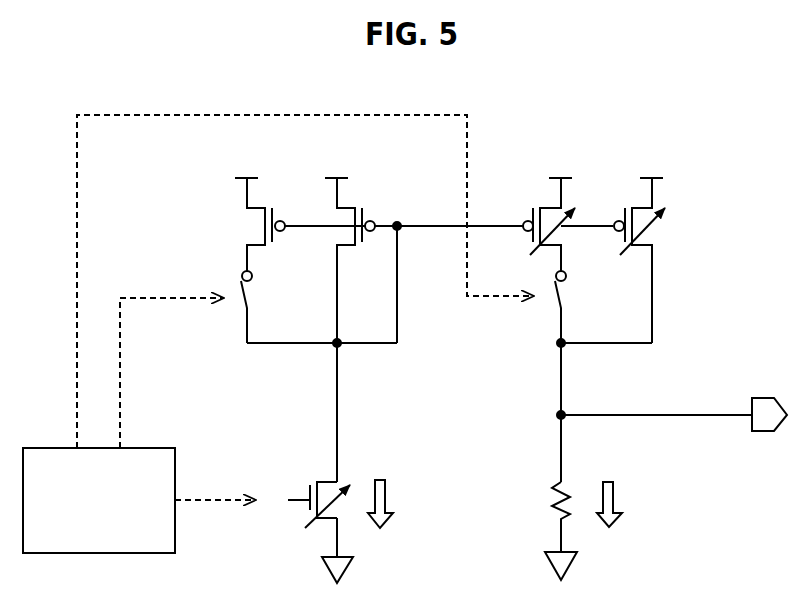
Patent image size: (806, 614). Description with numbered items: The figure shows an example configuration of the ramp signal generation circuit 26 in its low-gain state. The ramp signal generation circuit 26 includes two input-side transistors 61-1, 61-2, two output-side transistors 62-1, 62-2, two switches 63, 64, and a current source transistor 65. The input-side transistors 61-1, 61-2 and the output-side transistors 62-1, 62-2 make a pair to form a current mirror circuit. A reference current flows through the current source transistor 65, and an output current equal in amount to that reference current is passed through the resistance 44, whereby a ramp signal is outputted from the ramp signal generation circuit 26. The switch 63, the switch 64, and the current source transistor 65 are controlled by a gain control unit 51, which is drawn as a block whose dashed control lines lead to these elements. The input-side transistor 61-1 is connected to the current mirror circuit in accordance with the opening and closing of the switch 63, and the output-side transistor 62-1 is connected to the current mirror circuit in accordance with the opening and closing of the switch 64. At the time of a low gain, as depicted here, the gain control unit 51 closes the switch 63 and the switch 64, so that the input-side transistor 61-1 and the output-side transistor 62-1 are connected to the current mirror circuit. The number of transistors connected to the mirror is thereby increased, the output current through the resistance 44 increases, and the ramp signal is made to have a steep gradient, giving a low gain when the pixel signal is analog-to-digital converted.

The ramp signal generation circuit 26 is at (718, 136).
The input-side transistor 61-1 is at (256, 207).
The input-side transistor 61-2 is at (346, 207).
The output-side transistor 62-1 is at (548, 207).
The output-side transistor 62-2 is at (640, 207).
The switch 63 is at (243, 300).
The switch 64 is at (558, 298).
The current source transistor 65 is at (321, 480).
The resistance 44 is at (549, 497).
The gain control unit 51 is at (100, 553).